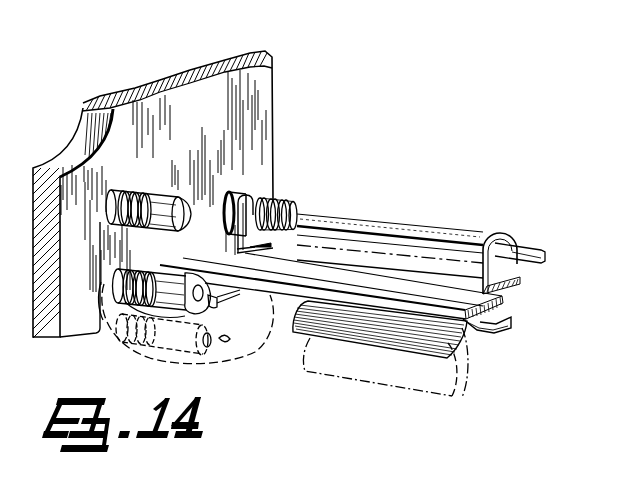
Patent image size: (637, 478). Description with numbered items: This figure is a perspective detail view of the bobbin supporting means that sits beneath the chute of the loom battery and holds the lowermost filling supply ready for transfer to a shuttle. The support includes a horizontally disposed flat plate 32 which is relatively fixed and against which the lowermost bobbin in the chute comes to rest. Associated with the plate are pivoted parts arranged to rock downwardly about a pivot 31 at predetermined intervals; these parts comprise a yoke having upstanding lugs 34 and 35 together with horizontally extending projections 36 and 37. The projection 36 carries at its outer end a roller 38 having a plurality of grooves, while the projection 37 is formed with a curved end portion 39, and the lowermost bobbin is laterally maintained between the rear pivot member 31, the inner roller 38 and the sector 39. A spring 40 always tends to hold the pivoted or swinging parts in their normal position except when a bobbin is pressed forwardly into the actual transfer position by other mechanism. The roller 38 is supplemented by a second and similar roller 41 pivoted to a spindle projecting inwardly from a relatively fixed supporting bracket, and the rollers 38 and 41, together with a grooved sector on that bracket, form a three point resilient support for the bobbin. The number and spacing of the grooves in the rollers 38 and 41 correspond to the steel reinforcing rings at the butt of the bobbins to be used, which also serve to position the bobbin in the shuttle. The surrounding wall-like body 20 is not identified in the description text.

The wall block 20 is at (153, 194).
The pivot 31 is at (383, 226).
The flat plate 32 is at (475, 305).
The upstanding lug 34 is at (258, 200).
The upstanding lug 35 is at (517, 268).
The horizontally extending projection 36 is at (240, 307).
The horizontally extending projection 37 is at (512, 328).
The roller 38 is at (167, 275).
The curved end portion 39 is at (417, 338).
The spring 40 is at (290, 203).
The second roller 41 is at (153, 196).